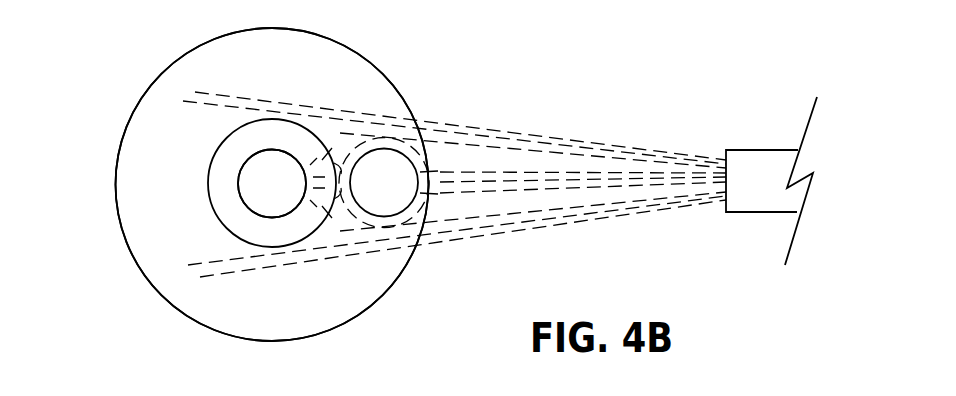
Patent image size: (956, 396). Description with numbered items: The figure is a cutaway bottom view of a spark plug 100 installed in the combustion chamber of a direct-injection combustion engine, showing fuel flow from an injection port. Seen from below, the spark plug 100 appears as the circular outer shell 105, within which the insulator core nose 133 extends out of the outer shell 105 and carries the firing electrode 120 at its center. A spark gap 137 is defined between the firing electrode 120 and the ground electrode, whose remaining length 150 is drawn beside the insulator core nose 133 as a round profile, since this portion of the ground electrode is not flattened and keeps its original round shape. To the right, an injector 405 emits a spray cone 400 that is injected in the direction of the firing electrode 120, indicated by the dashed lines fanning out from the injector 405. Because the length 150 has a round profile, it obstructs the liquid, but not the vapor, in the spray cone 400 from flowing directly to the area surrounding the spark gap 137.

The spark plug 100 is at (172, 85).
The outer shell 105 is at (141, 270).
The firing electrode 120 is at (238, 165).
The insulator core nose 133 is at (208, 193).
The spark gap 137 is at (263, 195).
The remaining length of ground electrode 150 is at (385, 147).
The spray cone 400 is at (508, 130).
The injector 405 is at (763, 150).